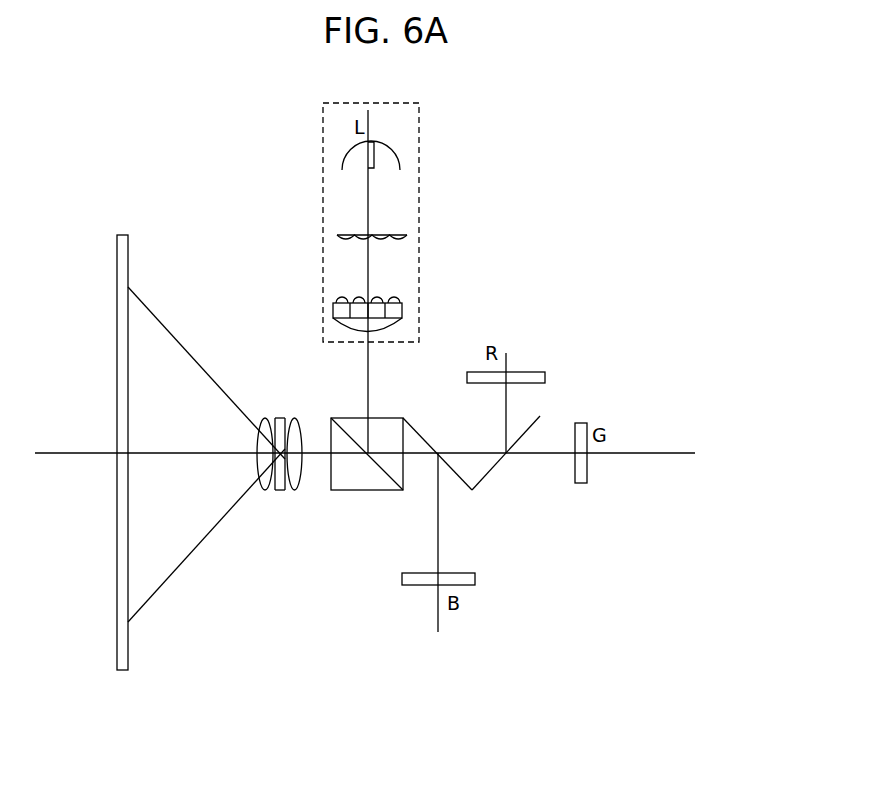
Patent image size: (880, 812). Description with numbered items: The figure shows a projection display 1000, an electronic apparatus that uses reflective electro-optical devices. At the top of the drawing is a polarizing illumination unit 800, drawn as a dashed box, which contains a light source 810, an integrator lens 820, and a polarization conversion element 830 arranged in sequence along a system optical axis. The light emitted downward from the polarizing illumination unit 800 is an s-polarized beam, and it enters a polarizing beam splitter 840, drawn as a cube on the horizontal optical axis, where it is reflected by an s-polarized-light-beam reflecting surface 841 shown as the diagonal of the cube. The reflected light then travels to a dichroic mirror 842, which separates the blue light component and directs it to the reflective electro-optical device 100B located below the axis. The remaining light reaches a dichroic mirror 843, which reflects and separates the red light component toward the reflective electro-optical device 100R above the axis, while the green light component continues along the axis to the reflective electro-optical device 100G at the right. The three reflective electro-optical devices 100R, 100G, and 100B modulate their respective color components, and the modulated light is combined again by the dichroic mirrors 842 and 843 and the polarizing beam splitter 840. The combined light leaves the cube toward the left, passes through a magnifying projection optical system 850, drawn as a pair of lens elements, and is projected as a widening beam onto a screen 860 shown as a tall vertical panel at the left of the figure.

The projection display 1000 is at (632, 419).
The polarizing illumination unit 800 is at (412, 133).
The light source 810 is at (397, 148).
The integrator lens 820 is at (400, 233).
The polarization conversion element 830 is at (403, 308).
The polarizing beam splitter 840 is at (342, 482).
The s-polarized-light-beam reflecting surface 841 is at (388, 480).
The dichroic mirror 842 is at (462, 486).
The dichroic mirror 843 is at (497, 470).
The magnifying projection optical system 850 is at (302, 408).
The screen 860 is at (123, 645).
The reflective electro-optical device 100R is at (530, 375).
The reflective electro-optical device 100G is at (582, 472).
The reflective electro-optical device 100B is at (417, 582).